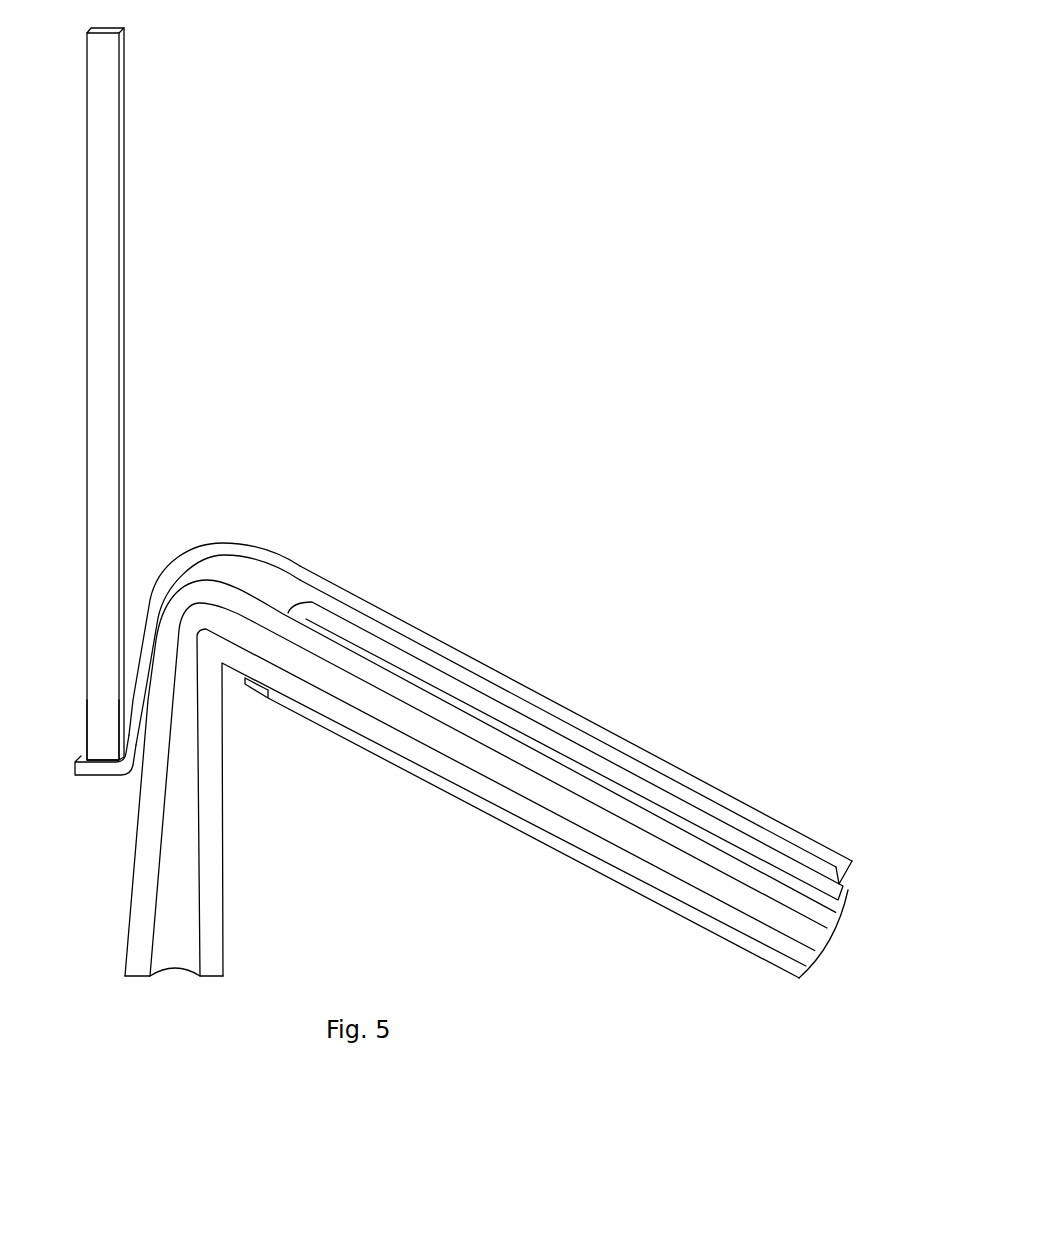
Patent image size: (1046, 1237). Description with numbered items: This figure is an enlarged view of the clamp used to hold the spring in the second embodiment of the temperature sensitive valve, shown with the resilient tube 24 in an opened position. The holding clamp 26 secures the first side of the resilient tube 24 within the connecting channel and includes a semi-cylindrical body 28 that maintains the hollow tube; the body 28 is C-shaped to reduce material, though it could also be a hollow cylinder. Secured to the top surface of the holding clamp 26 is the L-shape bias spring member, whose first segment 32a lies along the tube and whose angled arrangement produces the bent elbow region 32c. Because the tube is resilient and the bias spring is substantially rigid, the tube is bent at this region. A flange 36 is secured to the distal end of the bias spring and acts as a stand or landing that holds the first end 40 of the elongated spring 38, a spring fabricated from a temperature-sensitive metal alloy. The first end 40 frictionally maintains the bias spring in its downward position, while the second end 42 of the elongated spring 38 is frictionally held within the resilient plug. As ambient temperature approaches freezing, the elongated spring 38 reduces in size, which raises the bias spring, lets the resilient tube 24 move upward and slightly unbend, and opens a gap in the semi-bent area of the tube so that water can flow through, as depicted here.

The resilient tube 24 is at (606, 852).
The holding clamp 26 is at (255, 697).
The semi-cylindrical body 28 is at (843, 890).
The first segment 32a is at (468, 652).
The bent elbow region 32c is at (232, 547).
The flange 36 is at (117, 772).
The elongated spring 38 is at (108, 372).
The first end 40 is at (98, 742).
The second end 42 is at (103, 55).